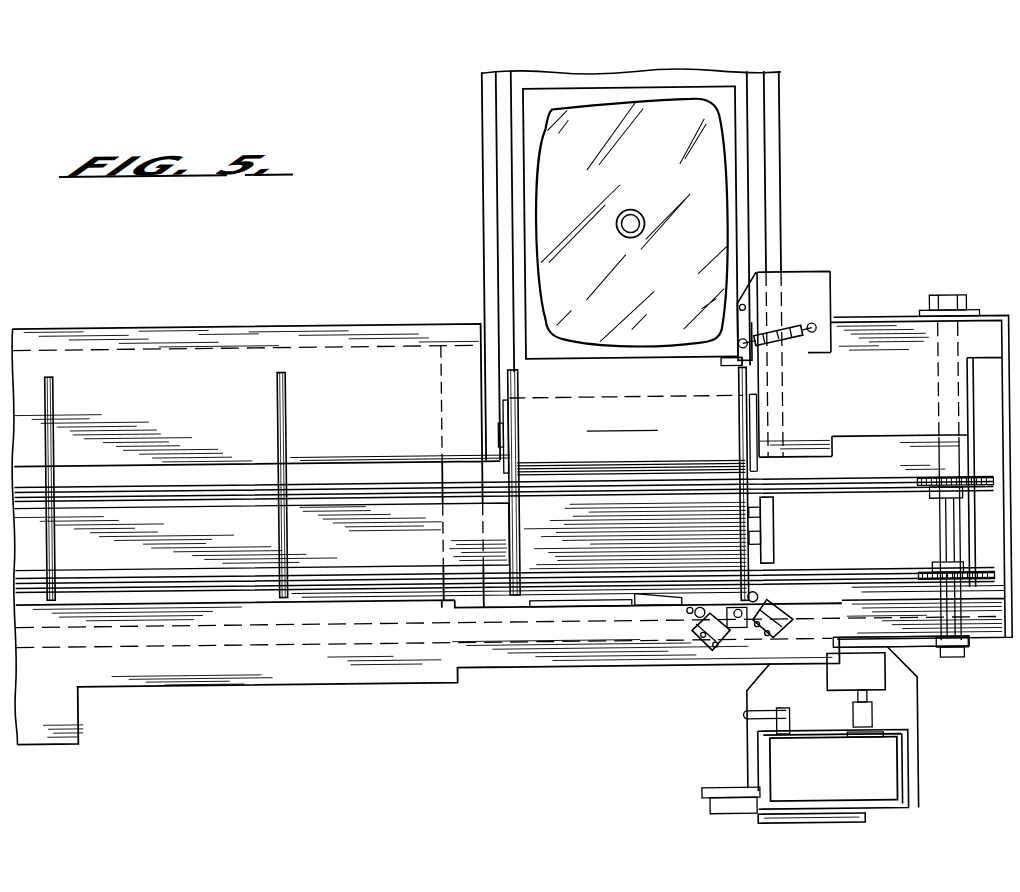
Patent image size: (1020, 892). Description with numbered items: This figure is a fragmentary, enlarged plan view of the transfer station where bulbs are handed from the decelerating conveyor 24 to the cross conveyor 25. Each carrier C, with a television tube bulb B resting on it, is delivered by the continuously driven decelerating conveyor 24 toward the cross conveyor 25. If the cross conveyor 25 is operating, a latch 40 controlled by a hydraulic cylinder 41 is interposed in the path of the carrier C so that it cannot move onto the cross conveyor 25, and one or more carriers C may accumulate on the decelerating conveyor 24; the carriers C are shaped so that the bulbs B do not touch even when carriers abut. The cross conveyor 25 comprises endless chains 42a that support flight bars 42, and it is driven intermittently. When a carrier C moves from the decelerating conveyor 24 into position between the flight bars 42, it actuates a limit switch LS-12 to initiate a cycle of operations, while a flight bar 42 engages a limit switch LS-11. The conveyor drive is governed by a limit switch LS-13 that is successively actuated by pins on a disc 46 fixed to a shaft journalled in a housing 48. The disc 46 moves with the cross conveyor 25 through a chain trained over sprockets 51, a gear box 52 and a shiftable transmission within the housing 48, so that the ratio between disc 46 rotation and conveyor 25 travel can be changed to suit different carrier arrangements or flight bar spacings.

The decelerating conveyor 24 is at (796, 151).
The cross conveyor 25 is at (233, 699).
The latch 40 is at (731, 364).
The hydraulic cylinder 41 is at (789, 326).
The flight bars 42 is at (284, 418).
The endless chains 42a is at (873, 581).
The disc 46 is at (791, 821).
The housing 48 is at (887, 777).
The sprockets 51 is at (921, 653).
The gear box 52 is at (872, 681).
The limit switch LS-11 is at (769, 623).
The limit switch LS-12 is at (712, 632).
The limit switch LS-13 is at (731, 805).
The television tube bulb B is at (547, 188).
The carrier C is at (534, 240).